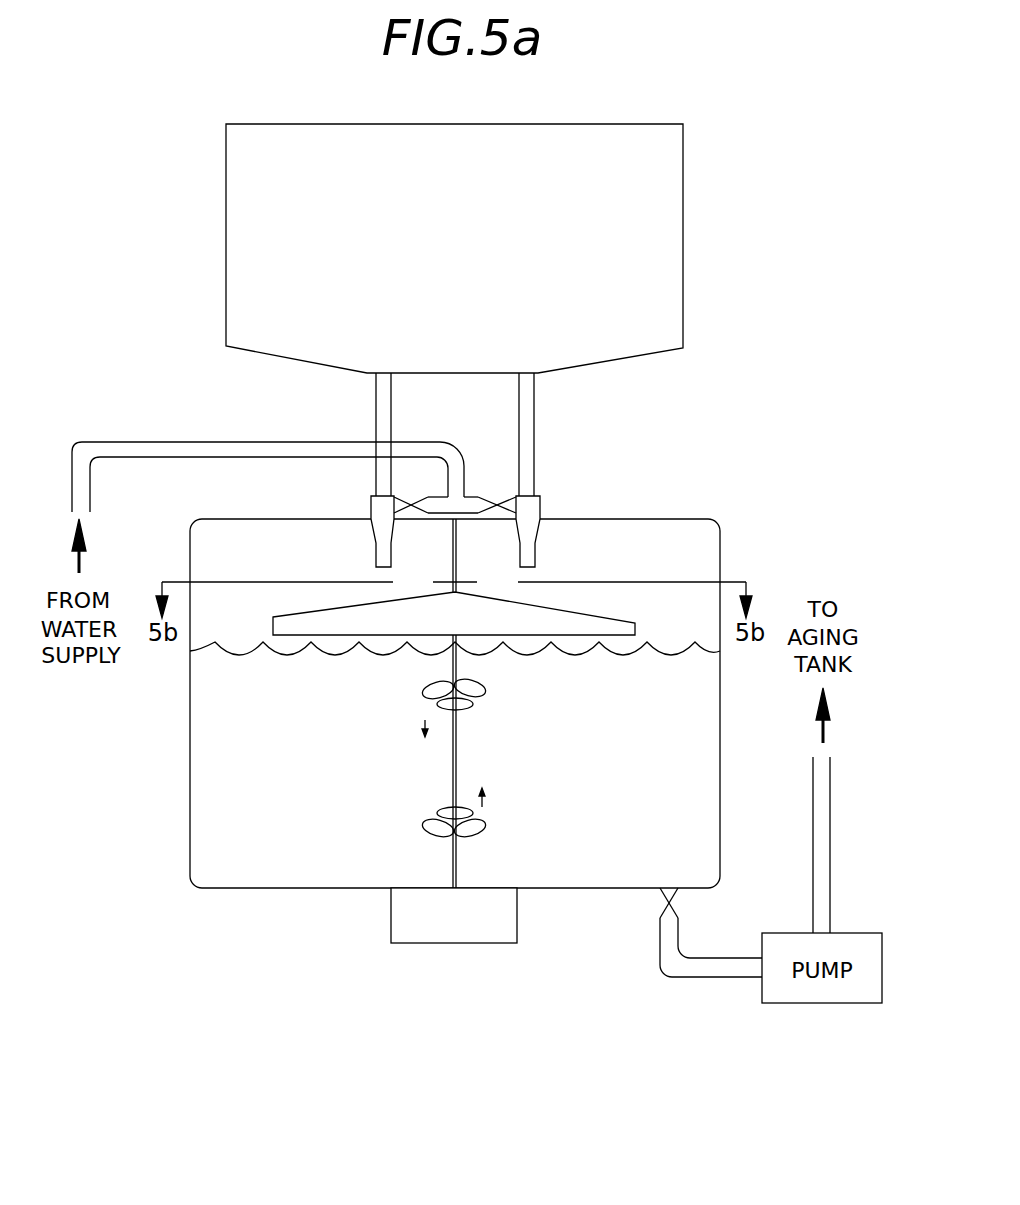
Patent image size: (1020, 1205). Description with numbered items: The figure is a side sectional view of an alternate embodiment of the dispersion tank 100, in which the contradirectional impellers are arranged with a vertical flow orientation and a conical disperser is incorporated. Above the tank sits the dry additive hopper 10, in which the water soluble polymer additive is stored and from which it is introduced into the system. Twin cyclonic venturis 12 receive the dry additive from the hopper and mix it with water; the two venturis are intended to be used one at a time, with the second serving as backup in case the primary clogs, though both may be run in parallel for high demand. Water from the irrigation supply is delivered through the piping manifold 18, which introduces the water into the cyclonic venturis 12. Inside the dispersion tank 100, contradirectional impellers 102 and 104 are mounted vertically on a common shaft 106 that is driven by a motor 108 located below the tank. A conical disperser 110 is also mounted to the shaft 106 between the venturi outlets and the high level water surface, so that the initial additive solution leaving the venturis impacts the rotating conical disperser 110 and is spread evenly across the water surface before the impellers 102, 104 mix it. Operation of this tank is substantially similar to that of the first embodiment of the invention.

The dry additive hopper 10 is at (683, 226).
The cyclonic venturis 12 is at (371, 548).
The piping manifold 18 is at (192, 441).
The dispersion tank 100 is at (270, 887).
The contradirectional impeller 102 is at (423, 822).
The contradirectional impeller 104 is at (485, 690).
The common shaft 106 is at (457, 858).
The motor 108 is at (440, 943).
The conical disperser 110 is at (582, 608).